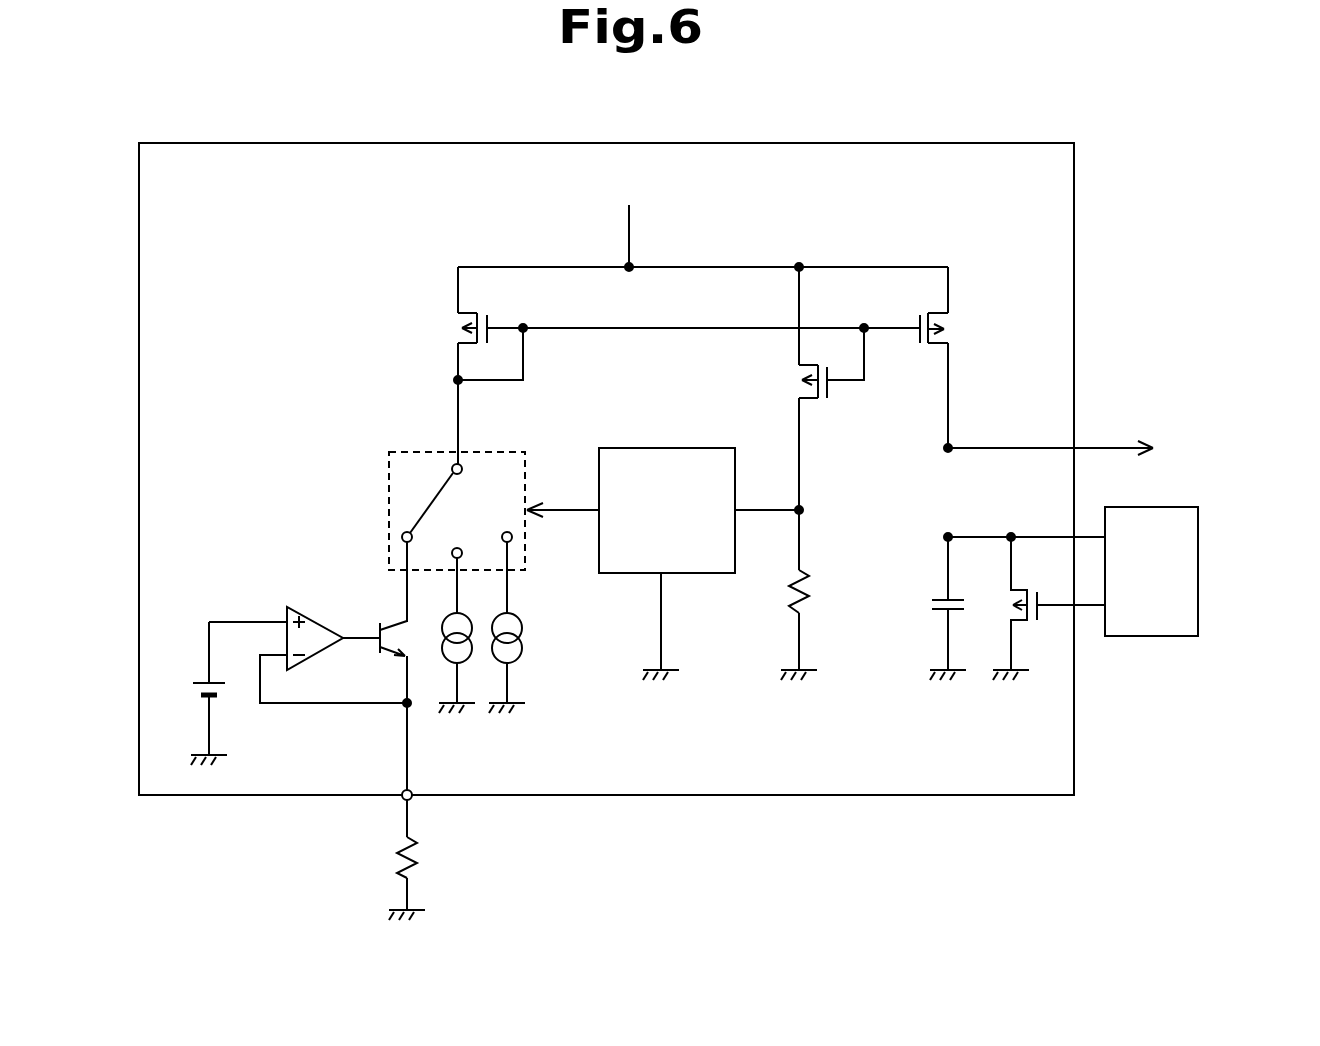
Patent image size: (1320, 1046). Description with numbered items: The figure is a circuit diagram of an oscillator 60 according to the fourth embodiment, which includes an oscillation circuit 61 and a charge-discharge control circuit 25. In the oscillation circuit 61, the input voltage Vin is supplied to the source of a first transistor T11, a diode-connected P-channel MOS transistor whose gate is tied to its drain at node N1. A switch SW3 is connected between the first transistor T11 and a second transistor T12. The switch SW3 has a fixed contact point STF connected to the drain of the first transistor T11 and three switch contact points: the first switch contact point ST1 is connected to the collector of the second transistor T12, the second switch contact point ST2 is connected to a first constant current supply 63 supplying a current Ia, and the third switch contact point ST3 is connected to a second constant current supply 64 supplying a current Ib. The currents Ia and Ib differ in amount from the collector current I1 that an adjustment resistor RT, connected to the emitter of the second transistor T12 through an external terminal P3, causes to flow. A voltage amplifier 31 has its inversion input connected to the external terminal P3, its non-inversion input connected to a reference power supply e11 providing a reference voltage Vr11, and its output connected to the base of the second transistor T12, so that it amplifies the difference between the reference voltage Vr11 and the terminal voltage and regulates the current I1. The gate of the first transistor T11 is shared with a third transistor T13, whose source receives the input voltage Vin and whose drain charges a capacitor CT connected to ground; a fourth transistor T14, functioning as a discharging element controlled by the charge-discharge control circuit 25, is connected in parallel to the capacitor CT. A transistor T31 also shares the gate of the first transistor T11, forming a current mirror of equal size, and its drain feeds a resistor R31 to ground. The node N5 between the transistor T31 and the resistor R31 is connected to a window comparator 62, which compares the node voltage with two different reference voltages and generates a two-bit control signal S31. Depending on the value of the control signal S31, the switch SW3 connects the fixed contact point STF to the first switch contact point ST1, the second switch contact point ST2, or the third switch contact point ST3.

The oscillator 60 is at (1234, 295).
The oscillation circuit 61 is at (1074, 343).
The window comparator 62 is at (698, 448).
The first constant current supply 63 is at (470, 662).
The second constant current supply 64 is at (517, 660).
The charge-discharge control circuit 25 is at (1178, 507).
The voltage amplifier 31 is at (320, 617).
The first transistor T11 is at (462, 323).
The second transistor T12 is at (378, 640).
The third transistor T13 is at (951, 320).
The fourth transistor T14 is at (1040, 612).
The transistor T31 is at (828, 393).
The resistor R31 is at (807, 597).
The adjustment resistor RT is at (418, 838).
The capacitor CT is at (942, 600).
The node N1 is at (455, 380).
The node N5 is at (805, 510).
The external terminal P3 is at (402, 800).
The switch SW3 is at (389, 470).
The first switch contact point ST1 is at (402, 536).
The second switch contact point ST2 is at (452, 553).
The third switch contact point ST3 is at (512, 540).
The fixed contact point STF is at (462, 466).
The control signal S31 is at (563, 497).
The input voltage Vin is at (703, 220).
The reference voltage Vr11 is at (243, 606).
The reference power supply e11 is at (205, 683).
The current I1 is at (415, 582).
The current Ia is at (482, 595).
The current Ib is at (529, 595).